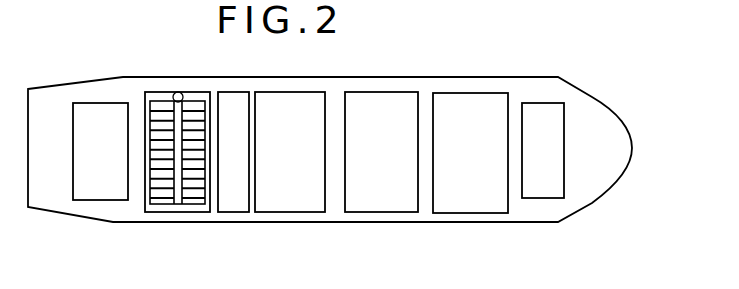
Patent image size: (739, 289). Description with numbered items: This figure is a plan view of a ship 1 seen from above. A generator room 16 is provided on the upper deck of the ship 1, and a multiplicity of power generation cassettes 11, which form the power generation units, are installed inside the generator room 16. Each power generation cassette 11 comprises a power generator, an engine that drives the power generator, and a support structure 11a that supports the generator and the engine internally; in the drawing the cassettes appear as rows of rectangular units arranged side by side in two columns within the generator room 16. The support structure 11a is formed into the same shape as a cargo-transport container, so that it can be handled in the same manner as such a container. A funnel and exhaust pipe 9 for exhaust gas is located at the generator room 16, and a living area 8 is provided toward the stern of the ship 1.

The ship 1 is at (501, 76).
The living area 8 is at (541, 199).
The funnel and exhaust pipe 9 is at (178, 92).
The power generation cassette 11 is at (148, 212).
The support structure 11a is at (161, 212).
The generator room 16 is at (197, 212).